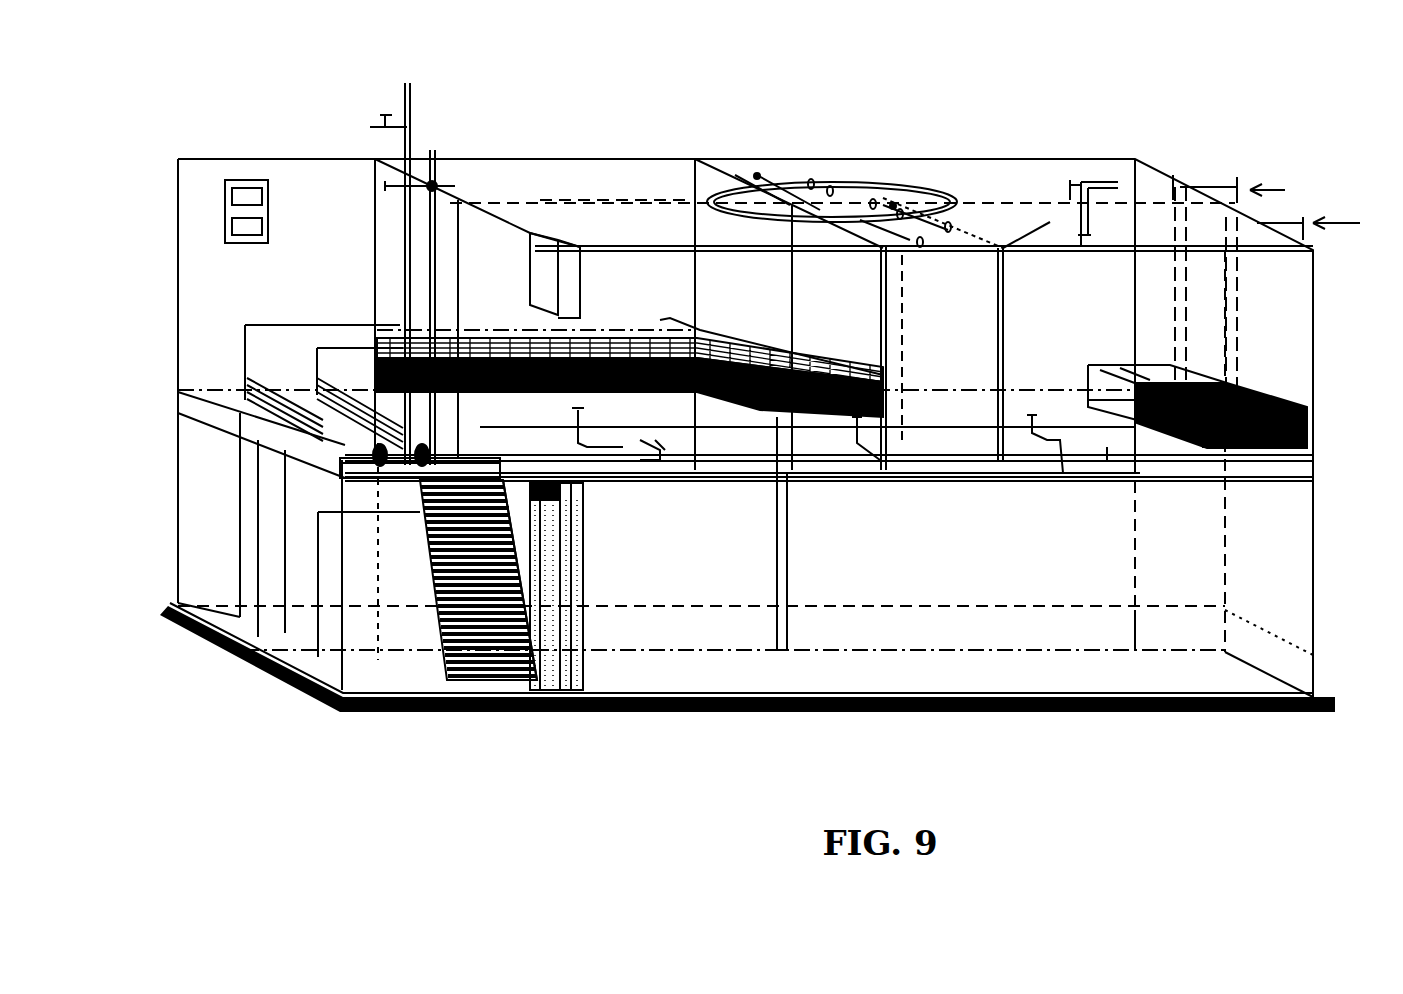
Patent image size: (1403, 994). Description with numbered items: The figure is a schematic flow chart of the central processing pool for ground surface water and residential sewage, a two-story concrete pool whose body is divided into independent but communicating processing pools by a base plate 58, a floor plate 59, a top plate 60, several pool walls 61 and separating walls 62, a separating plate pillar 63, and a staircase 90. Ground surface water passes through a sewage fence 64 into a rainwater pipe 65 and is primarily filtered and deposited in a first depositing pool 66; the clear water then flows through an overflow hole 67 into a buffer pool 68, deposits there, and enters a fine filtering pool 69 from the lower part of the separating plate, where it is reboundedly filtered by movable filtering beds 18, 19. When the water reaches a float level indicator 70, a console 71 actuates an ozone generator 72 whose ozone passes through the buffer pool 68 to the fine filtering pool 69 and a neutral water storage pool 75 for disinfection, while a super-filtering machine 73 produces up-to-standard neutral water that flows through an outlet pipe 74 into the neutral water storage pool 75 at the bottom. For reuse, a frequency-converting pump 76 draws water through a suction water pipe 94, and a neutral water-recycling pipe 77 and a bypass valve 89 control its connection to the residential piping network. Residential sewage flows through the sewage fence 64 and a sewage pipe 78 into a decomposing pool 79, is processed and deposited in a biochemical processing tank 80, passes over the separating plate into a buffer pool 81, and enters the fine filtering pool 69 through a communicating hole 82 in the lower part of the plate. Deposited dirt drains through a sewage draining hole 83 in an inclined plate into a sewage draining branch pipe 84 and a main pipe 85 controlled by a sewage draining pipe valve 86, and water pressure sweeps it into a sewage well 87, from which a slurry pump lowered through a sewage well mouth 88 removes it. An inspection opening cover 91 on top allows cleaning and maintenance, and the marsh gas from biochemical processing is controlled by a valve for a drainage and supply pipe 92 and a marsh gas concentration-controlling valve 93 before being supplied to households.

The movable filtering bed 18 is at (630, 337).
The movable filtering bed 19 is at (800, 347).
The base plate 58 is at (1318, 703).
The floor plate 59 is at (1315, 460).
The top plate 60 is at (660, 250).
The pool wall 61 is at (1315, 553).
The separating wall 62 is at (258, 605).
The separating plate pillar 63 is at (787, 578).
The sewage fence 64 is at (1305, 217).
The rainwater pipe 65 is at (1178, 195).
The first depositing pool 66 is at (1150, 348).
The overflow hole 67 is at (946, 250).
The buffer pool 68 is at (758, 172).
The fine filtering pool 69 is at (600, 200).
The float level indicator 70 is at (445, 186).
The console 71 is at (256, 226).
The ozone generator 72 is at (240, 195).
The super-filtering machine 73 is at (324, 387).
The outlet pipe 74 is at (288, 625).
The neutral water storage pool 75 is at (940, 692).
The frequency-converting pump 76 is at (420, 480).
The neutral water-recycling pipe 77 is at (432, 150).
The sewage pipe 78 is at (1268, 190).
The decomposing pool 79 is at (1255, 395).
The biochemical processing tank 80 is at (1050, 200).
The buffer pool 81 is at (893, 206).
The communicating hole 82 is at (858, 442).
The sewage draining hole 83 is at (645, 453).
The sewage draining branch pipe 84 is at (1080, 456).
The main pipe 85 is at (960, 478).
The sewage draining pipe valve 86 is at (455, 622).
The sewage well 87 is at (533, 707).
The sewage well mouth 88 is at (546, 236).
The bypass valve 89 is at (385, 115).
The staircase 90 is at (470, 665).
The inspection opening cover 91 is at (770, 196).
The drainage and supply pipe 92 is at (1083, 238).
The marsh gas concentration-controlling valve 93 is at (1048, 226).
The suction water pipe 94 is at (322, 640).